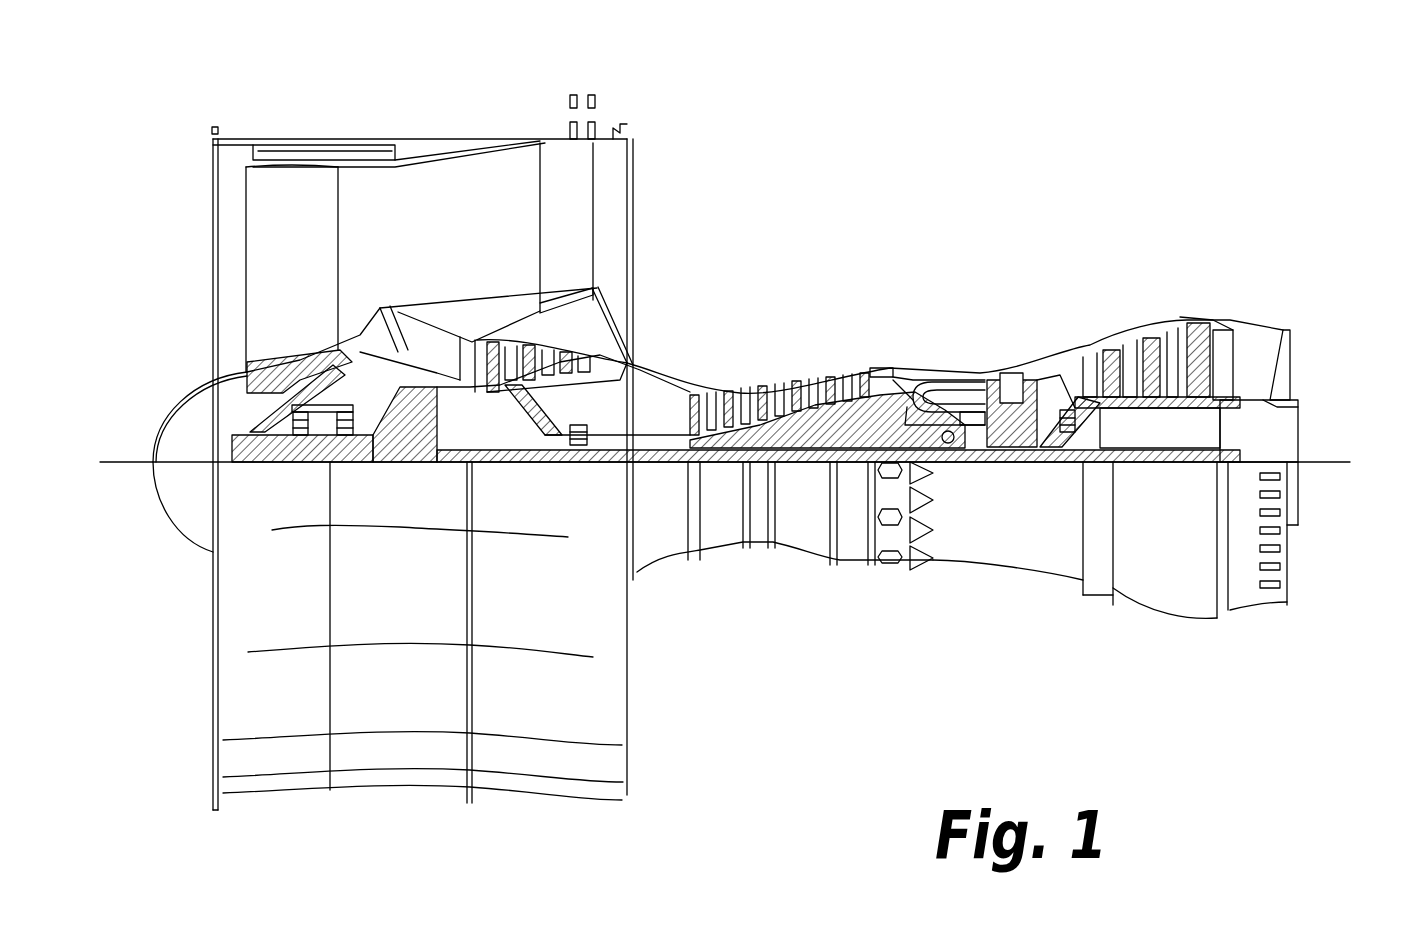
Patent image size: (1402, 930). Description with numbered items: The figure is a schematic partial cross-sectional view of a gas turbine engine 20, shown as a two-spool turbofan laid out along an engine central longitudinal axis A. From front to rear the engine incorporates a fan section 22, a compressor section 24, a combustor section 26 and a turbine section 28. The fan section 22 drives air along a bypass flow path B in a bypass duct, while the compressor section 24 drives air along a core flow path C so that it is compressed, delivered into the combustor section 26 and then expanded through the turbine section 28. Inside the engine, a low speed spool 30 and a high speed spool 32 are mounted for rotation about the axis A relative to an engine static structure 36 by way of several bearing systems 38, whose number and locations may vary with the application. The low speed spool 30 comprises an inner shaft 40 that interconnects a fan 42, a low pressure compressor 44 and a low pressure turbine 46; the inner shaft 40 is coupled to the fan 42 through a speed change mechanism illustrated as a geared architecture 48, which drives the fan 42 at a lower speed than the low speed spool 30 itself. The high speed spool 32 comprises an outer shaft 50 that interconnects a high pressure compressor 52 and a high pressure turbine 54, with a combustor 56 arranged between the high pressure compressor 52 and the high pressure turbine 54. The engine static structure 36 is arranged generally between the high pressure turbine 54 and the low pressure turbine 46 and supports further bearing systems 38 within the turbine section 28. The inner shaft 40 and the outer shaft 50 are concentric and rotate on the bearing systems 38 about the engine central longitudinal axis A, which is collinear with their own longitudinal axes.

The gas turbine engine 20 is at (958, 176).
The fan section 22 is at (203, 105).
The compressor section 24 is at (465, 272).
The combustor section 26 is at (1037, 272).
The turbine section 28 is at (1235, 272).
The low speed spool 30 is at (805, 472).
The high speed spool 32 is at (850, 427).
The engine static structure 36 is at (853, 568).
The bearing systems 38 is at (300, 462).
The inner shaft 40 is at (643, 462).
The fan 42 is at (292, 268).
The low pressure compressor 44 is at (553, 347).
The low pressure turbine 46 is at (1155, 340).
The geared architecture 48 is at (430, 462).
The outer shaft 50 is at (950, 442).
The high pressure compressor 52 is at (780, 435).
The high pressure turbine 54 is at (1010, 370).
The combustor 56 is at (935, 397).
The engine central longitudinal axis A is at (1333, 462).
The bypass flow path B is at (488, 225).
The core flow path C is at (428, 346).